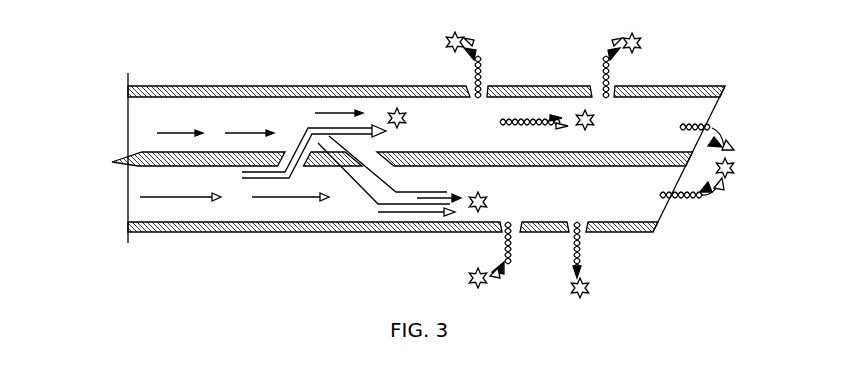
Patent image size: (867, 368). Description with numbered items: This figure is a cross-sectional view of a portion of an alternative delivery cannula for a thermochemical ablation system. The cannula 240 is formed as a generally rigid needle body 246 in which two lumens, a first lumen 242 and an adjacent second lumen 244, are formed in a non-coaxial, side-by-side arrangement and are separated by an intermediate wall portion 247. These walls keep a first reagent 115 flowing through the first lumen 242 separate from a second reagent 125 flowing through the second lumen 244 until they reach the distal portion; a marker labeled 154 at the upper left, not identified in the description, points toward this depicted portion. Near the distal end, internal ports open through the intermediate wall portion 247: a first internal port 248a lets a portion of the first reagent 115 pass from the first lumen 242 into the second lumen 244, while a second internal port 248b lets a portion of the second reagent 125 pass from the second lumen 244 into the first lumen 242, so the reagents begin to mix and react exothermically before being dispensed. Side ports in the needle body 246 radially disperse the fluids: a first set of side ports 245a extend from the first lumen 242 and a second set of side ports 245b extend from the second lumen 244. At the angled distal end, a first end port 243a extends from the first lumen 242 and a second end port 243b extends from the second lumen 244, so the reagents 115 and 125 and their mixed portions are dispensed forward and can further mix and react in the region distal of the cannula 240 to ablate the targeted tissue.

The fluid flow direction 154 is at (116, 14).
The cannula 240 is at (226, 79).
The first lumen 242 is at (137, 194).
The second lumen 244 is at (137, 113).
The needle body 246 is at (128, 88).
The intermediate wall portion 247 is at (121, 166).
The first internal port 248a is at (303, 130).
The second internal port 248b is at (372, 198).
The first side ports 245a is at (516, 235).
The second side ports 245b is at (468, 92).
The first end port 243a is at (655, 210).
The second end port 243b is at (707, 103).
The second reagent 125 is at (167, 132).
The first reagent 115 is at (190, 197).